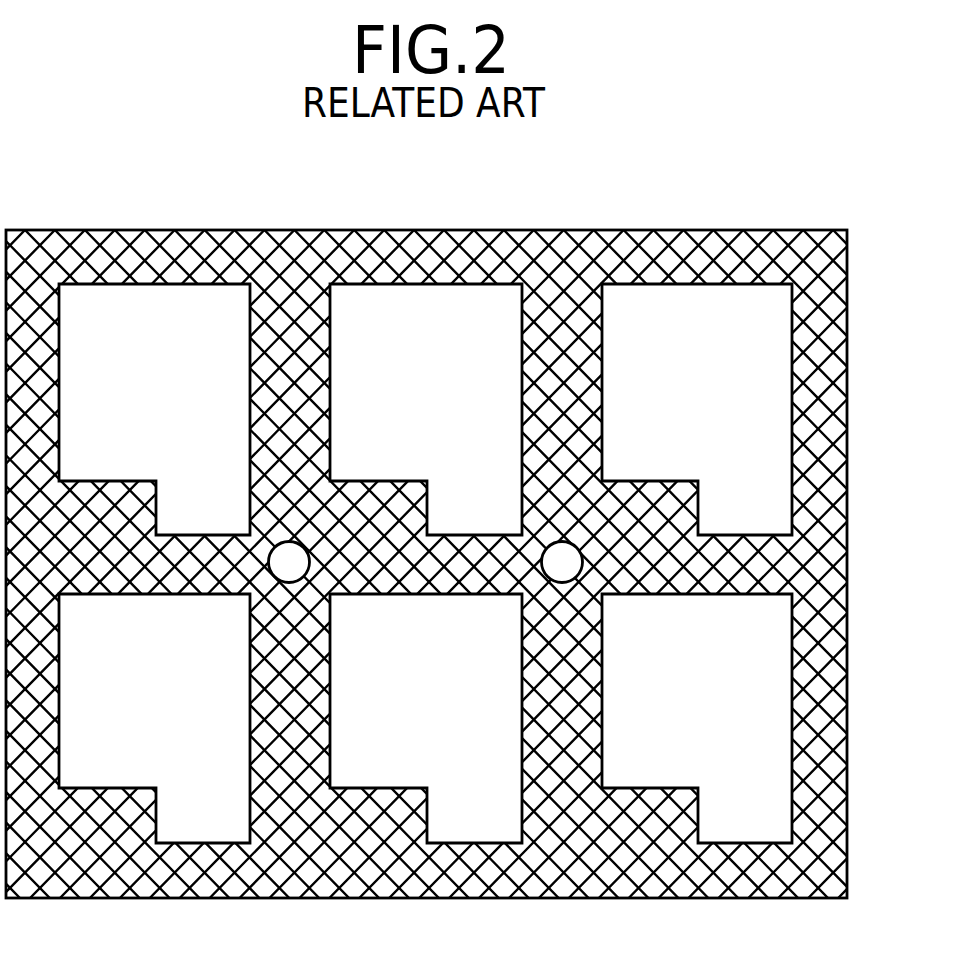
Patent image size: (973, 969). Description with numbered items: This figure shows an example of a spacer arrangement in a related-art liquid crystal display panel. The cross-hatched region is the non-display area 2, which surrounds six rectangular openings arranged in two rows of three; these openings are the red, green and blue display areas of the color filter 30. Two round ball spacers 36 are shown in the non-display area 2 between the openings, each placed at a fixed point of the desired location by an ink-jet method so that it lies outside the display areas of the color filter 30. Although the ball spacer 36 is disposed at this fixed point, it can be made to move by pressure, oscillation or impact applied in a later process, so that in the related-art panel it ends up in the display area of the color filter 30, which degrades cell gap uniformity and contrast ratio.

The non-display area 2 is at (847, 733).
The color filter 30 is at (778, 425).
The ball spacer 36 is at (582, 557).